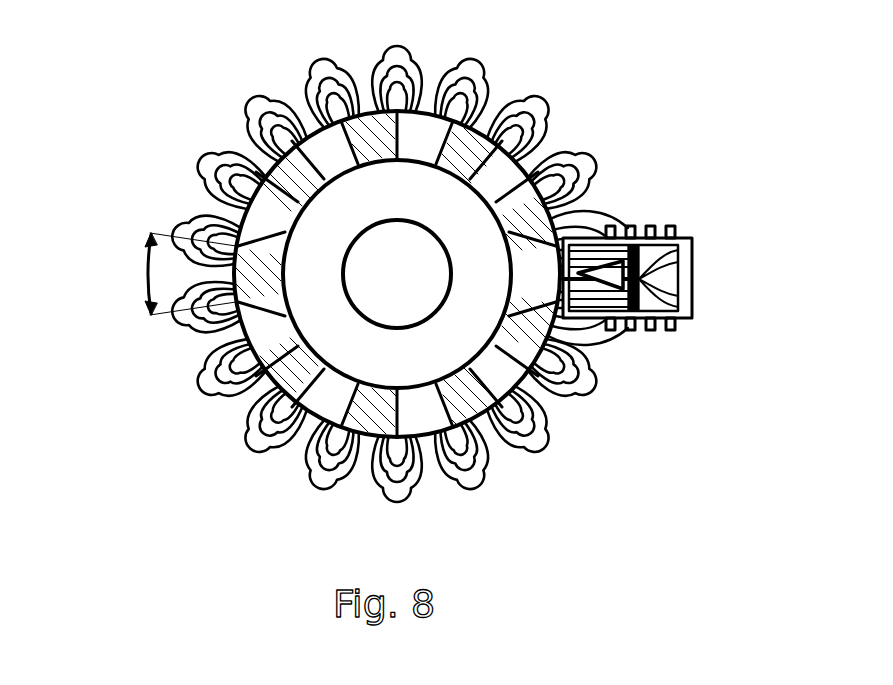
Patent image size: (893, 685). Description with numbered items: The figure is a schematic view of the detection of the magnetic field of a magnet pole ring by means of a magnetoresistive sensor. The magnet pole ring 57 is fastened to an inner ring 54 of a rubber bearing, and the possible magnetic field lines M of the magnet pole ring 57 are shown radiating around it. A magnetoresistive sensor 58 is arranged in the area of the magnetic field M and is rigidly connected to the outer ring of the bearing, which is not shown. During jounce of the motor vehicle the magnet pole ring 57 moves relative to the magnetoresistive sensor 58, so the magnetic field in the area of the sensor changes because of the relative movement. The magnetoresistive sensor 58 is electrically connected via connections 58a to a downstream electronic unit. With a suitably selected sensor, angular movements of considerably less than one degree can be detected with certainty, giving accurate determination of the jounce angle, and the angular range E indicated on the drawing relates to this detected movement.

The inner ring 54 is at (442, 328).
The magnet pole ring 57 is at (245, 131).
The magnetoresistive sensor 58 is at (680, 266).
The connections 58a is at (693, 241).
The magnetic field lines M is at (533, 98).
The angular detection range E is at (110, 268).